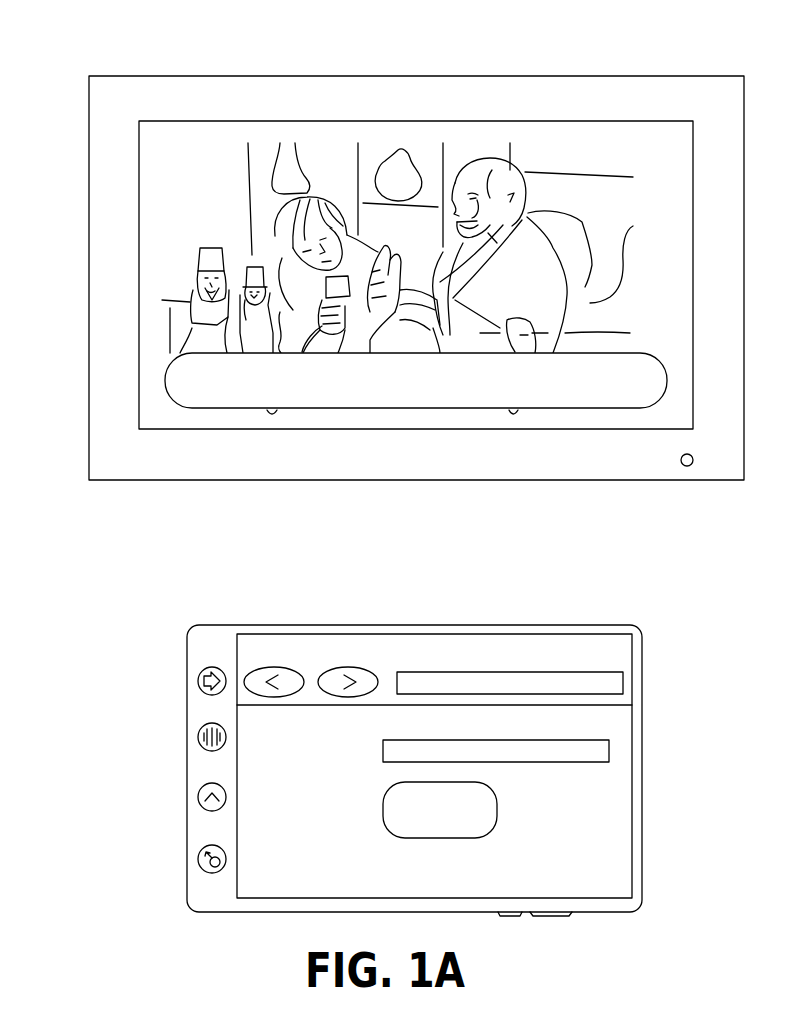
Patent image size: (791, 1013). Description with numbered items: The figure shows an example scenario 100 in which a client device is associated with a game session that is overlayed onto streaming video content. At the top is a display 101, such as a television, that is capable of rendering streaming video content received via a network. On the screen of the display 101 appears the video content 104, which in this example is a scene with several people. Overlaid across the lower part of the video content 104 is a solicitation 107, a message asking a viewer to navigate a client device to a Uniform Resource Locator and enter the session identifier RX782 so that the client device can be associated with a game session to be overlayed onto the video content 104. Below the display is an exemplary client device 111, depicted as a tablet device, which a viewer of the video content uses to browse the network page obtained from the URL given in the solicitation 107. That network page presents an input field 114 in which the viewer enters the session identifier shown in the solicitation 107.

The example scenario 100 is at (388, 468).
The display 101 is at (193, 142).
The video content 104 is at (128, 390).
The solicitation 107 is at (370, 393).
The client device 111 is at (408, 770).
The input field 114 is at (597, 753).